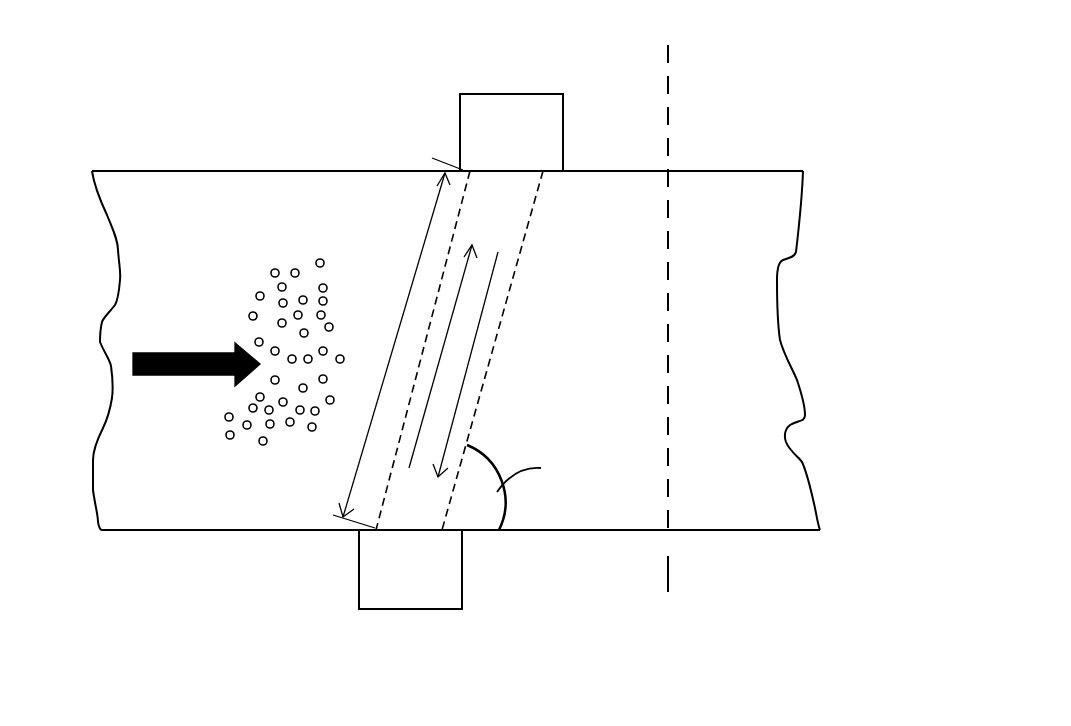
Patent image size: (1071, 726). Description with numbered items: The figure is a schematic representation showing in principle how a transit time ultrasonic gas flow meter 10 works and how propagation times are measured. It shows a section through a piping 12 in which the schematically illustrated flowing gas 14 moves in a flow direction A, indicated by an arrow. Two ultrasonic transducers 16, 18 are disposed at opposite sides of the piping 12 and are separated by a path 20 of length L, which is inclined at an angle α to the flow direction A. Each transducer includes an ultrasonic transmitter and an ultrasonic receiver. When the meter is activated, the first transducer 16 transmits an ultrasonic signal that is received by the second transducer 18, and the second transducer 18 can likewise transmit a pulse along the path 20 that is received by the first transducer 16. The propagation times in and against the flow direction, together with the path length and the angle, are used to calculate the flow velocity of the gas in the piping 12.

The transit time ultrasonic gas flow meter 10 is at (693, 127).
The piping 12 is at (293, 171).
The flowing gas 14 is at (324, 260).
The first ultrasonic transducer 16 is at (421, 609).
The second ultrasonic transducer 18 is at (552, 93).
The path 20 is at (505, 315).